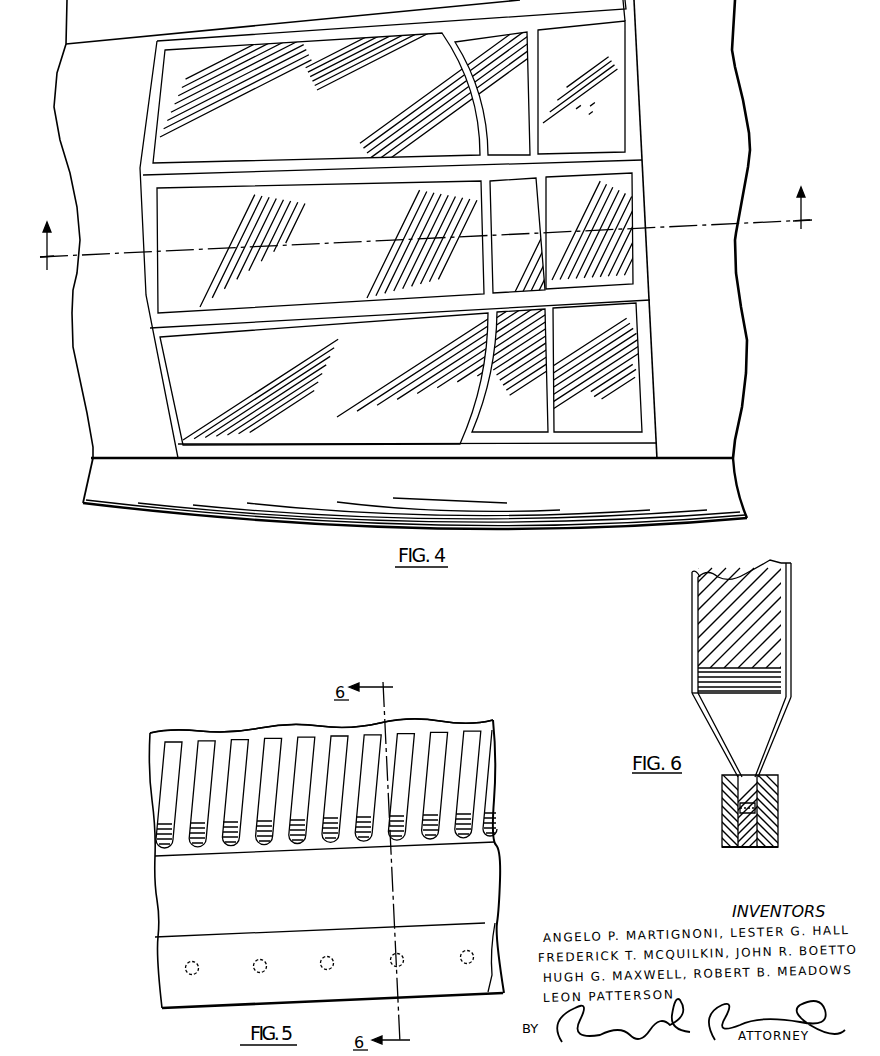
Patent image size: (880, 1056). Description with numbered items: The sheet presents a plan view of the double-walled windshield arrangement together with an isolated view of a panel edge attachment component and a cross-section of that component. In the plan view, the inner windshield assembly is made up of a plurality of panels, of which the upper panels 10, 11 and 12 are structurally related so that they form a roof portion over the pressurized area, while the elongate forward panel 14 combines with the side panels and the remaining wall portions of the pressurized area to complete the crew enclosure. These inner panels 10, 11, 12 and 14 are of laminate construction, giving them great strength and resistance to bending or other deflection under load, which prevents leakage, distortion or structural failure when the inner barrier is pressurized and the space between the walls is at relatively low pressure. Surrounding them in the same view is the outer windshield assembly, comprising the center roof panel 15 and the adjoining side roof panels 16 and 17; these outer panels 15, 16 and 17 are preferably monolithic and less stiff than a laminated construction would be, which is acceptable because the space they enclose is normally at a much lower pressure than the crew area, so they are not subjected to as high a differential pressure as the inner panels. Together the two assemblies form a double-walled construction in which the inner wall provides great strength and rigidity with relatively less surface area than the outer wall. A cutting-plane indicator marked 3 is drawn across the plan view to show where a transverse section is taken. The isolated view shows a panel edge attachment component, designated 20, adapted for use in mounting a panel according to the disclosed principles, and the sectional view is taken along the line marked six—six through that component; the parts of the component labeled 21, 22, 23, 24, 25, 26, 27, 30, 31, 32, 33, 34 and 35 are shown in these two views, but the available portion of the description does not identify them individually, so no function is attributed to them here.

In FIG. 4, the sill / section line 3- 3 is at (54, 216).
In FIG. 4, the upper panel 10 is at (610, 118).
In FIG. 4, the upper panel 11 is at (608, 258).
In FIG. 4, the upper panel 12 is at (615, 375).
In FIG. 4, the elongate forward panel 14 is at (507, 253).
In FIG. 4, the center roof panel 15 is at (170, 209).
In FIG. 4, the side roof panel 16 is at (177, 83).
In FIG. 4, the side roof panel 17 is at (200, 395).
In FIG. 5, the retainer strip assembly 20 is at (323, 855).
In FIG. 6, the retainer strip assembly 20 is at (739, 707).
In FIG. 5, the finger leg 21 is at (317, 808).
In FIG. 6, the finger leg 21 is at (738, 644).
In FIG. 5, the web 22 is at (485, 855).
In FIG. 6, the web 22 is at (708, 712).
In FIG. 5, the base flange 23 is at (332, 962).
In FIG. 6, the base flange 23 is at (737, 825).
In FIG. 6, the outer leg lip 24 is at (692, 580).
In FIG. 6, the inner leg lip 25 is at (786, 577).
In FIG. 5, the glass pane edge 26 is at (472, 722).
In FIG. 6, the glass pane edge 26 is at (739, 600).
In FIG. 6, the glass pane 27 is at (757, 578).
In FIG. 5, the slot 30 is at (290, 838).
In FIG. 6, the slot 30 is at (692, 696).
In FIG. 5, the slot bottom ribs 31 is at (421, 836).
In FIG. 6, the slot bottom ribs 31 is at (787, 675).
In FIG. 6, the support member 32 is at (763, 847).
In FIG. 5, the fastener hole 33 is at (190, 970).
In FIG. 6, the fastener hole 33 is at (762, 815).
In FIG. 5, the flange face 34 is at (425, 983).
In FIG. 6, the flange face 34 is at (727, 848).
In FIG. 6, the clamp block 35 is at (778, 780).